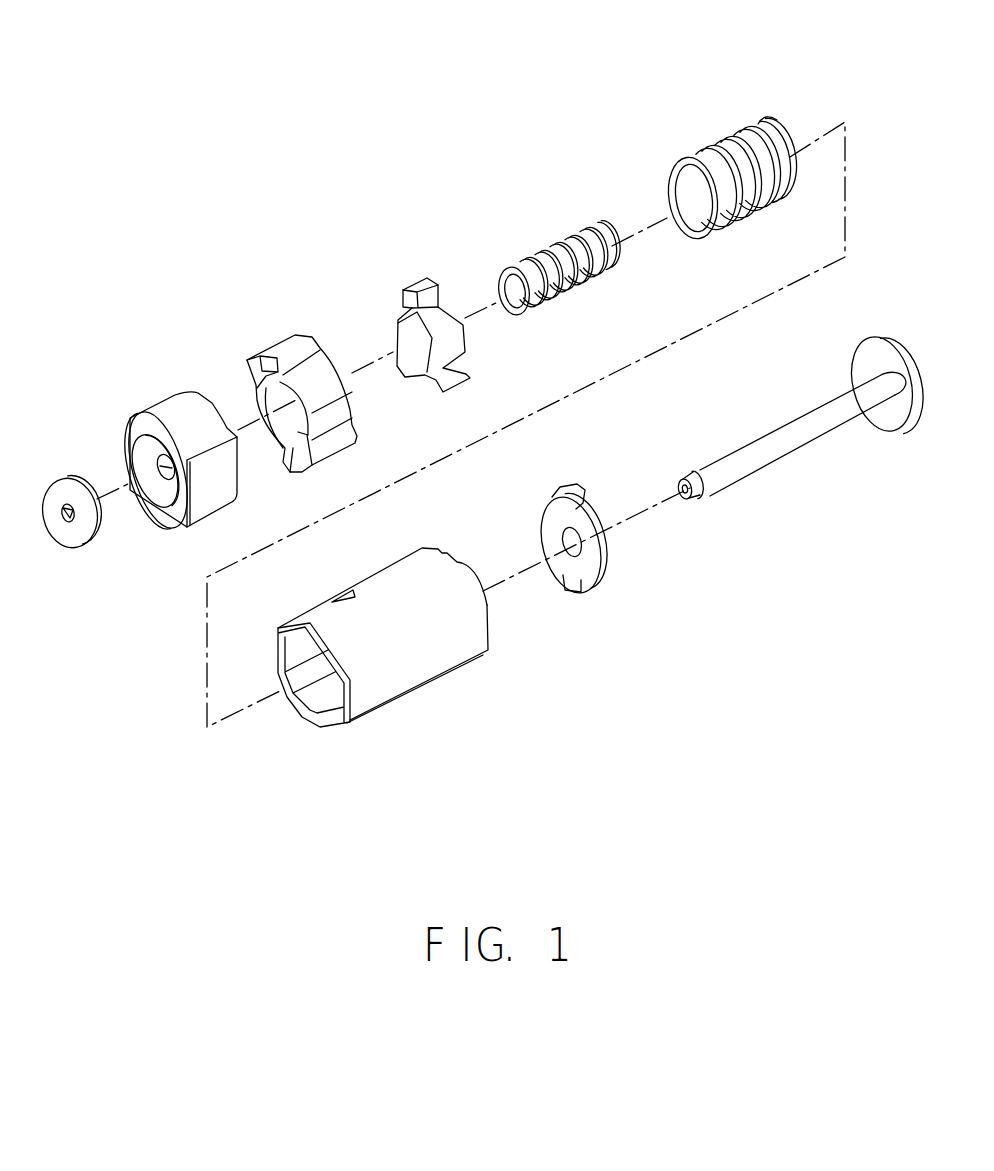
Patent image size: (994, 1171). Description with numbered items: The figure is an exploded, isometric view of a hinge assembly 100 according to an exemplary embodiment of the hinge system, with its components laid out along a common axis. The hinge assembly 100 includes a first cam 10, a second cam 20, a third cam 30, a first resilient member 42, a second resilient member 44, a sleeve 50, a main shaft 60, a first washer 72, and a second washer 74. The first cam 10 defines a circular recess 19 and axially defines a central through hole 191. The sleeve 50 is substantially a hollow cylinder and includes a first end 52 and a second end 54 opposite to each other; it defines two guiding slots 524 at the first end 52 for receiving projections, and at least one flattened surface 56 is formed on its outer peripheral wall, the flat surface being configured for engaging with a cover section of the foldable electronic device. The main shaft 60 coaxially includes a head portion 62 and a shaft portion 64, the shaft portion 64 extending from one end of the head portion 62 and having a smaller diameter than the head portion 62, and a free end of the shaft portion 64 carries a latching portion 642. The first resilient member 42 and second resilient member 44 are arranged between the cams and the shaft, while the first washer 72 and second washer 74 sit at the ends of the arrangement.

The hinge assembly 100 is at (486, 78).
The first cam 10 is at (165, 407).
The circular recess 19 is at (150, 447).
The central through hole 191 is at (163, 468).
The second cam 20 is at (287, 348).
The third cam 30 is at (417, 318).
The first resilient member 42 is at (568, 243).
The second resilient member 44 is at (718, 150).
The sleeve 50 is at (399, 624).
The first end 52 is at (310, 717).
The guiding slots 524 is at (320, 613).
The second end 54 is at (473, 587).
The flattened surface 56 is at (372, 688).
The main shaft 60 is at (759, 414).
The head portion 62 is at (866, 356).
The shaft portion 64 is at (742, 457).
The latching portion 642 is at (687, 477).
The first washer 72 is at (590, 570).
The second washer 74 is at (78, 537).